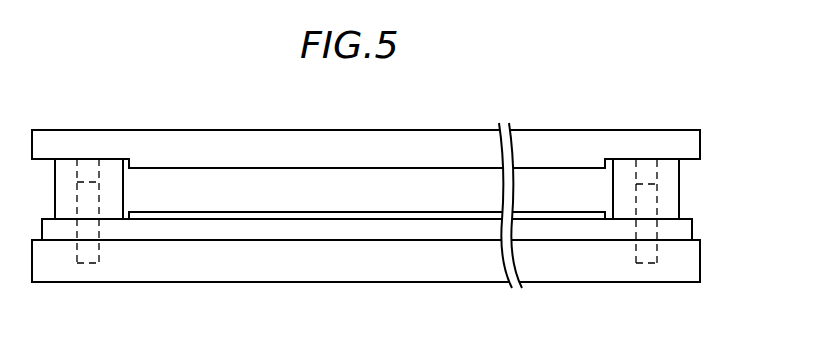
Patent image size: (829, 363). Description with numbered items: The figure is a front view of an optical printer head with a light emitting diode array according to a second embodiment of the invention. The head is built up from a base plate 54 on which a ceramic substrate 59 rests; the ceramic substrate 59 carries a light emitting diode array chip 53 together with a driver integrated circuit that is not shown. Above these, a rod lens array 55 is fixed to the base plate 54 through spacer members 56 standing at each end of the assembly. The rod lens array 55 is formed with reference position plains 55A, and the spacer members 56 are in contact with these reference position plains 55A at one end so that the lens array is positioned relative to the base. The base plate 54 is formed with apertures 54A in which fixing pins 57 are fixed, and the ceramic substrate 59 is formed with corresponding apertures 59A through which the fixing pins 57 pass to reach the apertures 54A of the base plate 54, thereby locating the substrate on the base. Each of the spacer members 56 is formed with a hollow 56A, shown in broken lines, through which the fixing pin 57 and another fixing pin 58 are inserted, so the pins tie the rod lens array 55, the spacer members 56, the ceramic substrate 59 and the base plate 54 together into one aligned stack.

The light emitting diode array chip 53 is at (312, 218).
The base plate 54 is at (118, 282).
The apertures 54A is at (658, 257).
The rod lens array 55 is at (362, 142).
The reference position plains 55A is at (696, 160).
The spacer members 56 is at (680, 181).
The hollow 56A is at (658, 202).
The fixing pins 57 is at (642, 253).
The fixing pin 58 is at (648, 165).
The ceramic substrate 59 is at (238, 233).
The apertures 59A is at (658, 228).